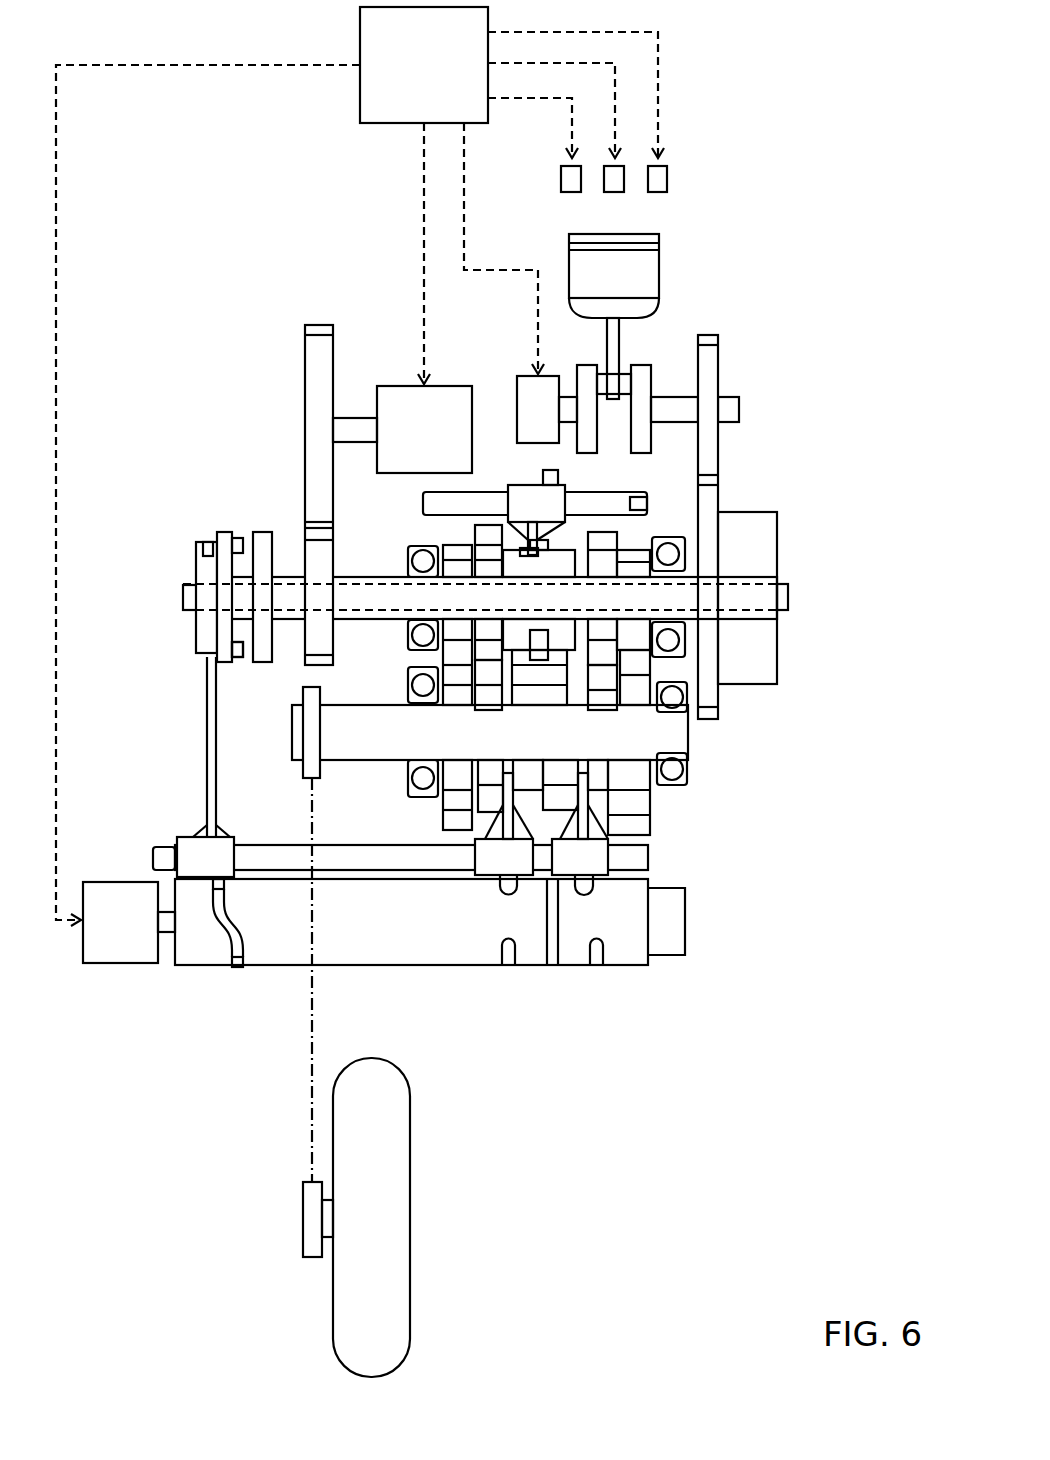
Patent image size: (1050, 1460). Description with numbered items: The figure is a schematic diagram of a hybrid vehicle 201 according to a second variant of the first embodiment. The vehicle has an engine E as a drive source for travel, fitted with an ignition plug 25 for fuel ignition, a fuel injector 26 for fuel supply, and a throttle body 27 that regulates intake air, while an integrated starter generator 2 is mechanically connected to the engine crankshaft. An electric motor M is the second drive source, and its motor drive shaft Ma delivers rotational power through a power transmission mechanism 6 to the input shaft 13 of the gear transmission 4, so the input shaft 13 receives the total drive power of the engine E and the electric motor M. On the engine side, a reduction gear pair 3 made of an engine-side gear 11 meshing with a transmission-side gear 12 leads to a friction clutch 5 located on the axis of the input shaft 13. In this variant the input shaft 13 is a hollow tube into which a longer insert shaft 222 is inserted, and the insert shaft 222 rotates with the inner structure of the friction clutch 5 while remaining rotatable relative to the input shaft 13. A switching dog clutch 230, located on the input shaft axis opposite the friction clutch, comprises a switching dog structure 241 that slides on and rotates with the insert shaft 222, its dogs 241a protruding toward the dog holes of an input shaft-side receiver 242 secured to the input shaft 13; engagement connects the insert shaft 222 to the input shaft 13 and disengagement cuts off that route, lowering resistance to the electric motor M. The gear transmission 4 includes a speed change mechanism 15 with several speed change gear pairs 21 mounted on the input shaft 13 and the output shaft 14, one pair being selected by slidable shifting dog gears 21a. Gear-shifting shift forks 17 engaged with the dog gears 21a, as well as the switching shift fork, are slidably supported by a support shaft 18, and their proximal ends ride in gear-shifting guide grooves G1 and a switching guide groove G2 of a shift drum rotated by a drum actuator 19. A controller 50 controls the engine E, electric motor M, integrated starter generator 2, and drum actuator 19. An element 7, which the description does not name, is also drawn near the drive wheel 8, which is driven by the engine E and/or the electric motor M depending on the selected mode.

The controller 50 is at (360, 32).
The hybrid vehicle 201 is at (845, 80).
The engine E is at (725, 165).
The ignition plug 25 is at (561, 182).
The fuel injector 26 is at (614, 193).
The throttle body 27 is at (667, 178).
The integrated starter generator 2 is at (520, 380).
The reduction gear pair 3 is at (745, 464).
The engine-side gear 11 is at (718, 440).
The transmission-side gear 12 is at (718, 503).
The friction clutch 5 is at (777, 650).
The insert shaft 222 is at (788, 597).
The input shaft 13 is at (363, 577).
The switching dog clutch 230 is at (192, 628).
The switching dog structure 241 is at (200, 545).
The input shaft-side receiver 242 is at (258, 532).
The dogs 241a is at (235, 657).
The power transmission mechanism 6 is at (305, 350).
The electric motor M is at (405, 386).
The motor drive shaft Ma is at (358, 418).
The gear transmission 4 is at (512, 652).
The speed change mechanism 15 is at (403, 685).
The output shaft 14 is at (292, 745).
The speed change gear pairs 21 is at (650, 832).
The gear-shifting shift forks 17 is at (530, 495).
The shifting dog gears 21a is at (560, 540).
The support shaft 18 is at (645, 500).
The switching guide groove G2 is at (236, 967).
The gear-shifting guide grooves G1 is at (597, 967).
The drum actuator 19 is at (123, 963).
The drive chain axis 7 is at (312, 1082).
The drive wheel 8 is at (410, 1222).